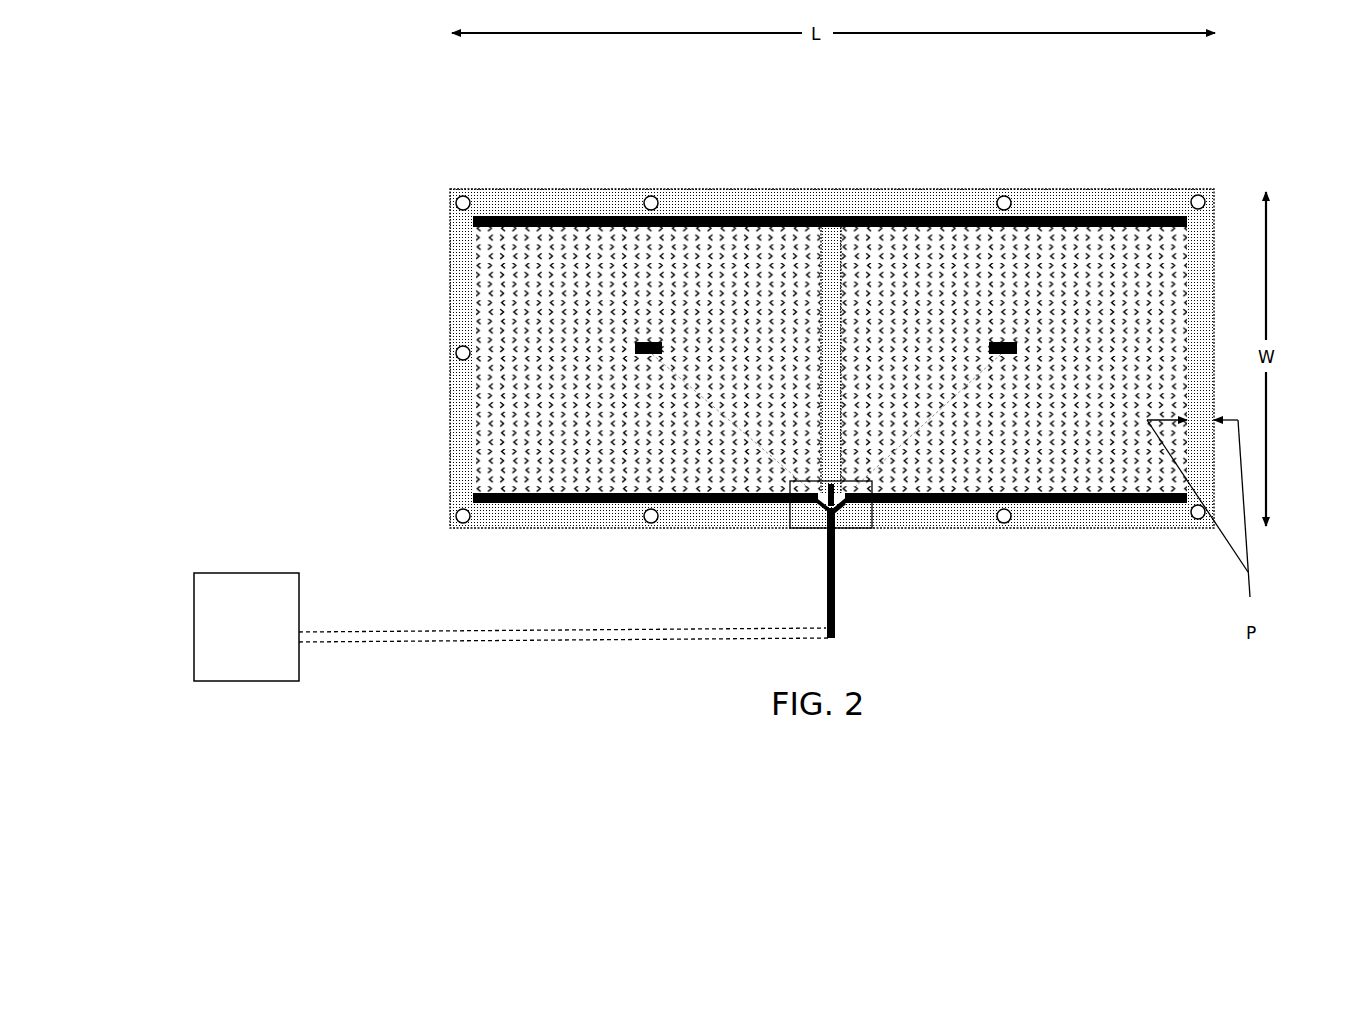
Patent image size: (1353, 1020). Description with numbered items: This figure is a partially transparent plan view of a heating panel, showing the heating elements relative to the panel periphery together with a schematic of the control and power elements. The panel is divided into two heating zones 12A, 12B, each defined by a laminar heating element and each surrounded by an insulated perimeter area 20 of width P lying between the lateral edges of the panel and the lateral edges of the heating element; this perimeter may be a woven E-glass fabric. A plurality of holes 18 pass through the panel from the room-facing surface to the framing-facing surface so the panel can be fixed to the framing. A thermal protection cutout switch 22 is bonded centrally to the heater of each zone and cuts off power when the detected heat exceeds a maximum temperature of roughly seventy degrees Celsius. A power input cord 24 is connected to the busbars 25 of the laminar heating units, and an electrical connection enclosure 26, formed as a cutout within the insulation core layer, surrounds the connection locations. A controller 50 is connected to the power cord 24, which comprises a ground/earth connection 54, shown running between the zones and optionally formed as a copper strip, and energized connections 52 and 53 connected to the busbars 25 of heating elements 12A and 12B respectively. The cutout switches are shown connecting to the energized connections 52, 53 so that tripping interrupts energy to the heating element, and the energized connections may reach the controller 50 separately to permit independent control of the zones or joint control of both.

The heating zone 12A is at (553, 247).
The heating zone 12B is at (924, 255).
The holes 18 is at (455, 353).
The insulated perimeter area 20 is at (465, 398).
The thermal protection cutout switch 22 is at (645, 340).
The power input cord 24 is at (836, 570).
The busbars 25 is at (718, 216).
The electrical connection enclosure 26 is at (786, 528).
The controller 50 is at (512, 627).
The energized connection 52 is at (814, 530).
The energized connection 53 is at (848, 523).
The ground/earth connection 54 is at (831, 216).